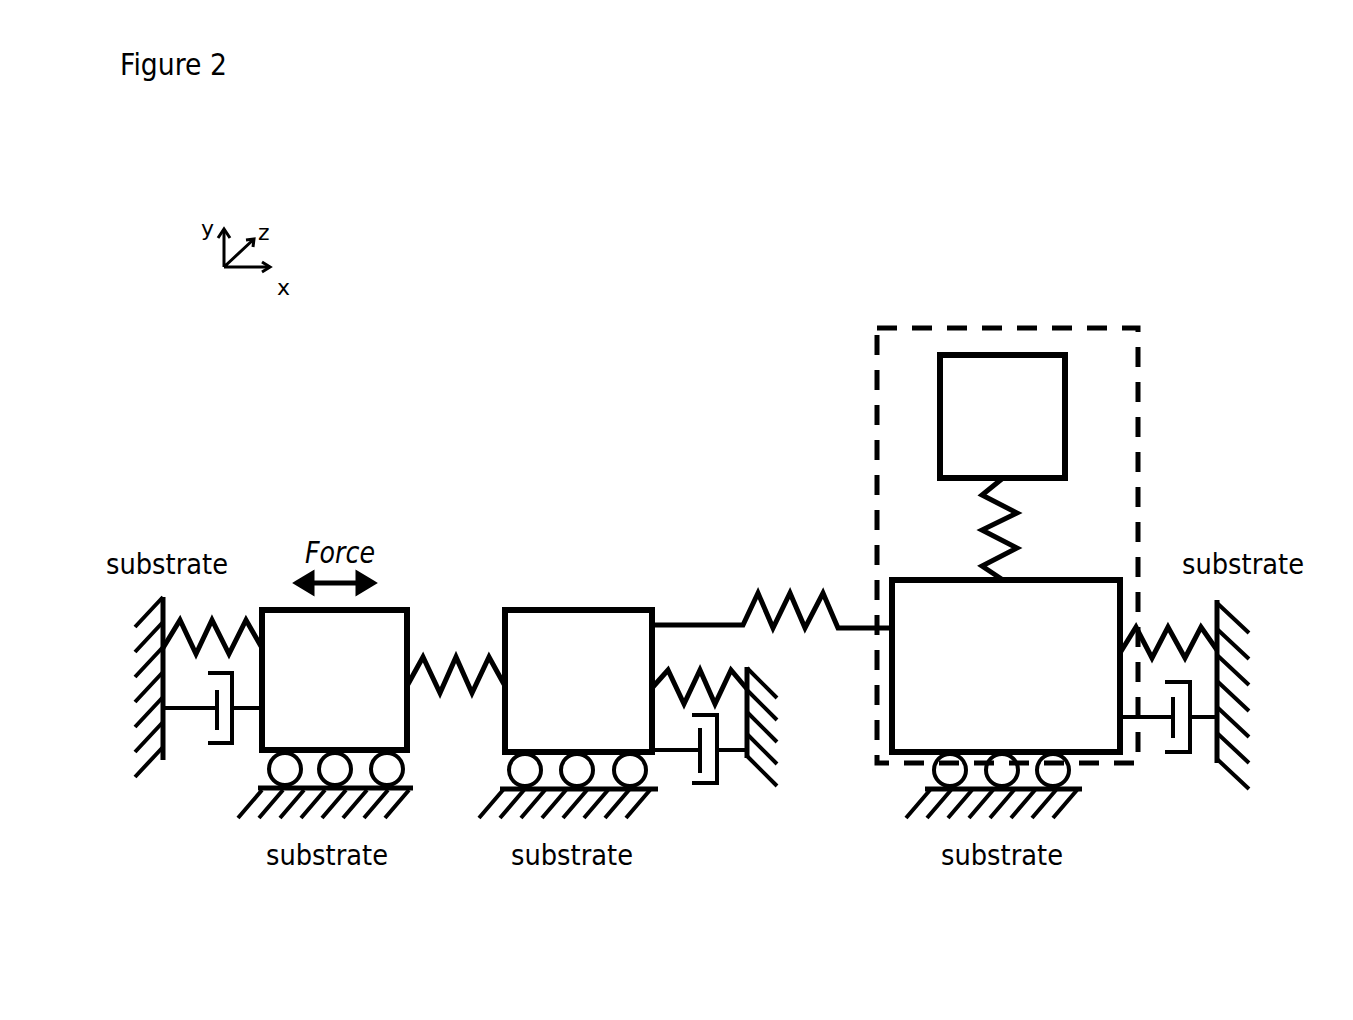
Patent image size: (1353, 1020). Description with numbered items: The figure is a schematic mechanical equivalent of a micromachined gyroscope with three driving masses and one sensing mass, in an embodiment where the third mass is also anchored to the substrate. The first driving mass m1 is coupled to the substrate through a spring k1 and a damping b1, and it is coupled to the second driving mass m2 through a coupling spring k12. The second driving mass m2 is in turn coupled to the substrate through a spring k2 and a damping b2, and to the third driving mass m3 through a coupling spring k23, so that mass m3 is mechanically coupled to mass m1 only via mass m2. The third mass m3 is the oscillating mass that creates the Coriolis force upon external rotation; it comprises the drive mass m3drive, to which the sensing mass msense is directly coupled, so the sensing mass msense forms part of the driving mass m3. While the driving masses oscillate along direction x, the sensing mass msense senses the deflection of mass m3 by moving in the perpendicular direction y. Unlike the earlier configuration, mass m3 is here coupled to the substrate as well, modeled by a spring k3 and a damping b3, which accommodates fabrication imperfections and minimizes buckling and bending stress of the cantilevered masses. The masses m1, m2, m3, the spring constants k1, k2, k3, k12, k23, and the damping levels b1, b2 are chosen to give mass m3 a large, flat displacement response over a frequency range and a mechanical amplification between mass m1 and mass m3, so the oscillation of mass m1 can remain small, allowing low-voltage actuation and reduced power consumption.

The first driving mass m1 is at (325, 714).
The second driving mass m2 is at (568, 714).
The third driving mass m3 is at (981, 536).
The sensing mass msense is at (1002, 416).
The drive mass m3drive is at (1006, 699).
The spring constant k1 is at (212, 619).
The spring constant k12 is at (456, 657).
The spring constant k2 is at (699, 669).
The spring constant k23 is at (772, 591).
The spring k3 is at (1168, 624).
The damping level b1 is at (212, 736).
The damping level b2 is at (699, 770).
The damping b3 is at (1168, 740).